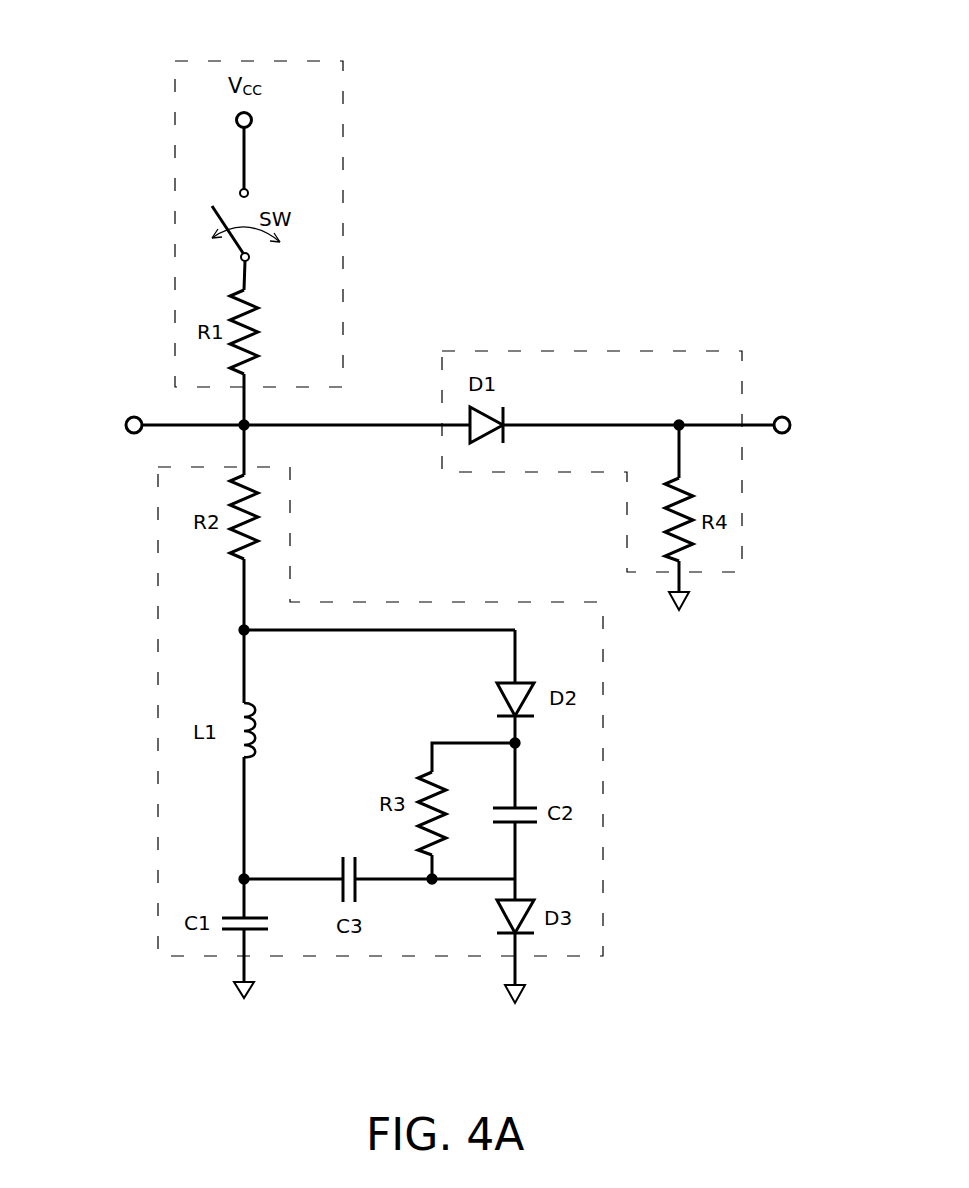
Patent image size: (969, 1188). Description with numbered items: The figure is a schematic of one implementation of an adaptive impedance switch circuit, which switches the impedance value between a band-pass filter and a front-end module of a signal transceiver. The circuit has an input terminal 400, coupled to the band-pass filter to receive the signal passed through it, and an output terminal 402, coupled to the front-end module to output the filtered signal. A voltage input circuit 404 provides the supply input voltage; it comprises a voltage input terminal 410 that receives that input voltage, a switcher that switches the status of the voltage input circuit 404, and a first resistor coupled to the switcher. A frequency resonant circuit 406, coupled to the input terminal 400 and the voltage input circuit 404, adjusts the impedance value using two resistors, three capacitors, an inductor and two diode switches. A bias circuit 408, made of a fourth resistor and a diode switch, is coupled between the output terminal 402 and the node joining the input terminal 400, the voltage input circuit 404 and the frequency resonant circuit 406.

The input terminal 400 is at (130, 415).
The output terminal 402 is at (787, 415).
The voltage input circuit 404 is at (180, 60).
The frequency resonant circuit 406 is at (156, 578).
The bias circuit 408 is at (698, 350).
The voltage input terminal 410 is at (254, 117).